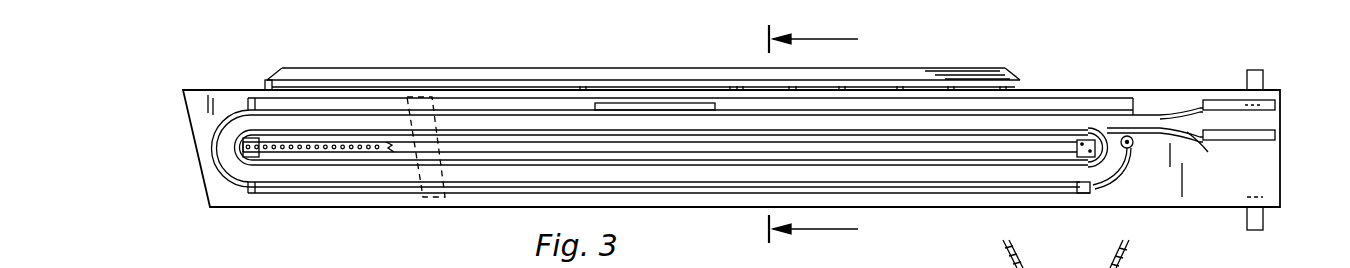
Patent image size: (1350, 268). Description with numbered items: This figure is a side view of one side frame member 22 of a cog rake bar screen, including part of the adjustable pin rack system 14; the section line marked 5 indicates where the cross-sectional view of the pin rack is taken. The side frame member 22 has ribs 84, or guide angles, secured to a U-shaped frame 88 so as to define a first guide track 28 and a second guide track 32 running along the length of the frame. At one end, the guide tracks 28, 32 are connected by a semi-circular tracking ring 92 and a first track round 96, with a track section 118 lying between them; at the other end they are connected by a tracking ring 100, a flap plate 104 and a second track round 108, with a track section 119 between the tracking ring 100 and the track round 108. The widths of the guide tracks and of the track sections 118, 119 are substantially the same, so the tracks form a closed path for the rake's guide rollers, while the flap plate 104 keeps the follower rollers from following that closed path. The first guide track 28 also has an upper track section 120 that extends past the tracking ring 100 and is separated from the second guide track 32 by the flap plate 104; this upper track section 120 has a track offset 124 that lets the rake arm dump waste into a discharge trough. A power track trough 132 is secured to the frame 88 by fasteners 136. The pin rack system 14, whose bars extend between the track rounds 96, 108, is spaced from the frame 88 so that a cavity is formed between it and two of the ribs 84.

The side frame member 22 is at (296, 45).
The fasteners 136 is at (266, 86).
The power track trough 132 is at (433, 75).
The first guide track 28 is at (505, 120).
The first track round 96 is at (258, 166).
The second guide track 32 is at (703, 170).
The track section 118 is at (235, 140).
The semi-circular tracking ring 92 is at (235, 157).
The adjustable pin rack system 14 is at (301, 162).
The flap plate 104 is at (1108, 124).
The ribs 84 is at (1030, 130).
The upper track section 120 is at (1158, 115).
The track offset 124 is at (1187, 135).
The track section 119 is at (1110, 160).
The second track round 108 is at (1093, 163).
The tracking ring 100 is at (1117, 173).
The U-shaped frame 88 is at (1257, 173).
The section line 5- 5 is at (829, 135).